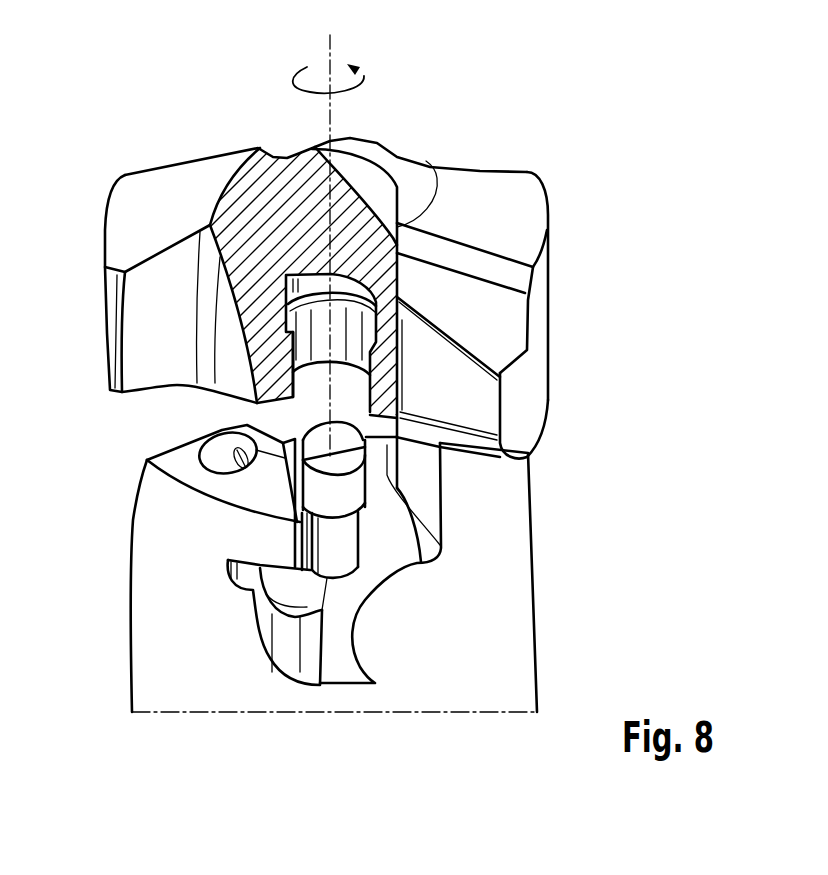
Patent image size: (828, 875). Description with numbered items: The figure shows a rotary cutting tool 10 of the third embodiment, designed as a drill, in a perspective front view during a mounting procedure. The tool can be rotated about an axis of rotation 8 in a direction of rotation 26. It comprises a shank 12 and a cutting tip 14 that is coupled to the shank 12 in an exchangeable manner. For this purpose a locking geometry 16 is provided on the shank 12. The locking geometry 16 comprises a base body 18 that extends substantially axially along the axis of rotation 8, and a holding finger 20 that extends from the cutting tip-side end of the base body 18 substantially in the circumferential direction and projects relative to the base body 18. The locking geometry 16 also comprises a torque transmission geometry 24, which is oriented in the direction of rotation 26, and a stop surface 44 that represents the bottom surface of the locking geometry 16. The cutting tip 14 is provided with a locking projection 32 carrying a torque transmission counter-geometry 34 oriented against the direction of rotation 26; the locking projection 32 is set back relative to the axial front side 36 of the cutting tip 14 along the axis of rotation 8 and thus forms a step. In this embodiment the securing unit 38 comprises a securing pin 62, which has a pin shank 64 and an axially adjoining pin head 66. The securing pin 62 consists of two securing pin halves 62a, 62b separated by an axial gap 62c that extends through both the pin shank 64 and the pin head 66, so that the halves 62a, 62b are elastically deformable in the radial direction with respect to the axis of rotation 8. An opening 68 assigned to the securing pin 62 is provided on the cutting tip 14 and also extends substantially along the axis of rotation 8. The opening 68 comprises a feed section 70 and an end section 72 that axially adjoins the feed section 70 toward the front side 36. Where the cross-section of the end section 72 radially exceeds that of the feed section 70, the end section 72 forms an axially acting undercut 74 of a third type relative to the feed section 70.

The axis of rotation 8 is at (330, 50).
The rotary cutting tool 10 is at (563, 143).
The shank 12 is at (520, 648).
The cutting tip 14 is at (483, 182).
The locking geometry 16 is at (161, 617).
The base body 18 is at (147, 579).
The holding finger 20 is at (267, 537).
The torque transmission geometry 24 is at (282, 652).
The direction of rotation 26 is at (367, 75).
The locking projection 32 is at (518, 375).
The torque transmission counter-geometry 34 is at (473, 383).
The axial front side 36 is at (143, 182).
The securing unit 38 is at (413, 528).
The stop surface 44 is at (347, 670).
The securing pin 62 is at (371, 539).
The securing pin half 62a is at (302, 433).
The securing pin half 62b is at (364, 495).
The axial gap 62c is at (333, 443).
The pin shank 64 is at (332, 560).
The pin head 66 is at (322, 490).
The opening 68 is at (313, 390).
The feed section 70 is at (522, 308).
The end section 72 is at (298, 276).
The undercut 74 is at (392, 280).